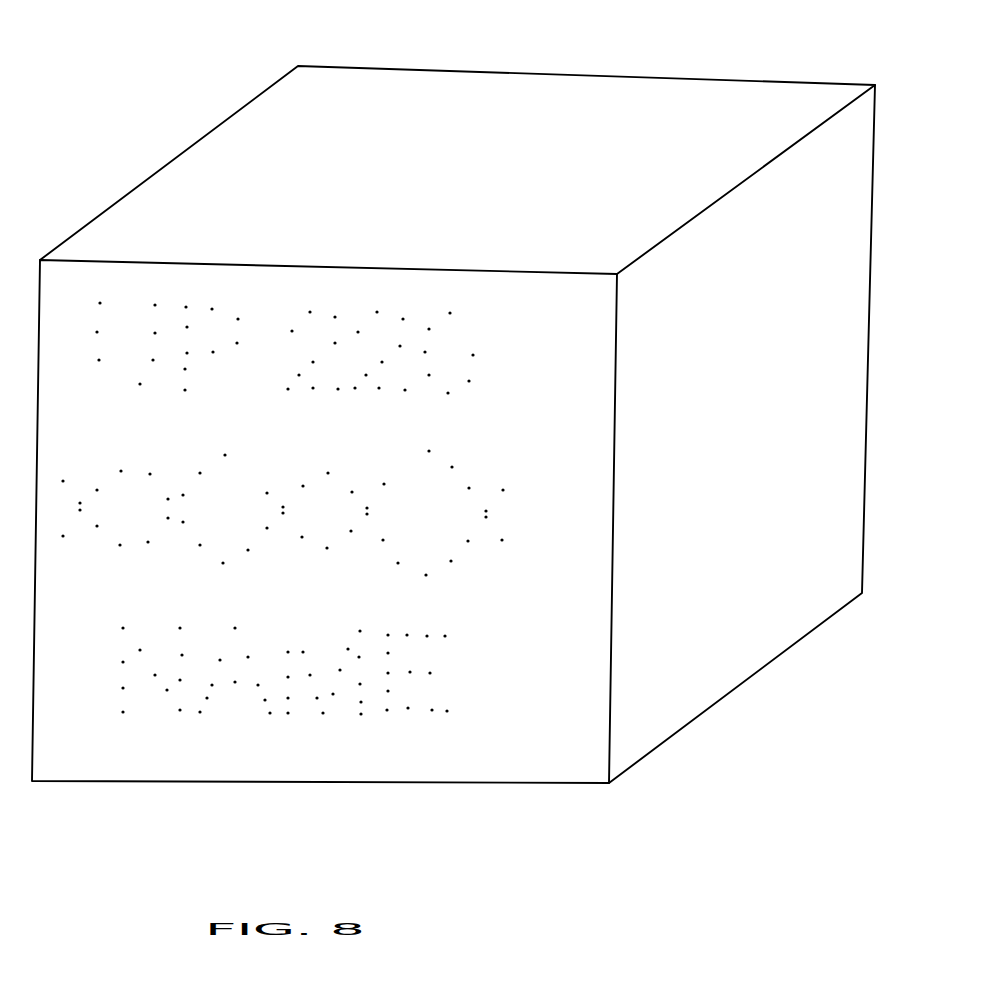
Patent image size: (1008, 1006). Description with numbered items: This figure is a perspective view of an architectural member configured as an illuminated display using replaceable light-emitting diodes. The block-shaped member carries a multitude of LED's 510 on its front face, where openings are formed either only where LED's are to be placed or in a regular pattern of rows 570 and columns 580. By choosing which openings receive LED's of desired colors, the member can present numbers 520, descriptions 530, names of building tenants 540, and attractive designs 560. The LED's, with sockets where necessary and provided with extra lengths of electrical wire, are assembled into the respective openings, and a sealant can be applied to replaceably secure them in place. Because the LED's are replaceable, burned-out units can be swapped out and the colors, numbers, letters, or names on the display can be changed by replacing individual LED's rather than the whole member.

The LED's 510 is at (470, 330).
The numbers 520 is at (368, 297).
The descriptions 530 is at (180, 290).
The names of building tenants 540 is at (245, 717).
The attractive designs 560 is at (522, 514).
The rows 570 is at (494, 382).
The columns 580 is at (142, 715).